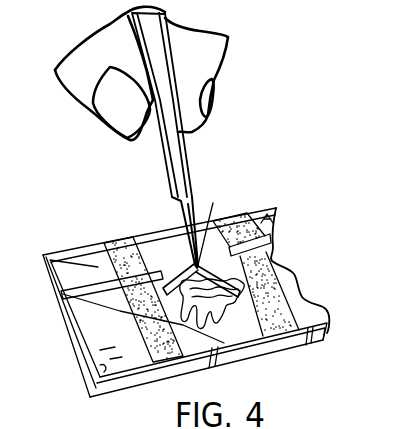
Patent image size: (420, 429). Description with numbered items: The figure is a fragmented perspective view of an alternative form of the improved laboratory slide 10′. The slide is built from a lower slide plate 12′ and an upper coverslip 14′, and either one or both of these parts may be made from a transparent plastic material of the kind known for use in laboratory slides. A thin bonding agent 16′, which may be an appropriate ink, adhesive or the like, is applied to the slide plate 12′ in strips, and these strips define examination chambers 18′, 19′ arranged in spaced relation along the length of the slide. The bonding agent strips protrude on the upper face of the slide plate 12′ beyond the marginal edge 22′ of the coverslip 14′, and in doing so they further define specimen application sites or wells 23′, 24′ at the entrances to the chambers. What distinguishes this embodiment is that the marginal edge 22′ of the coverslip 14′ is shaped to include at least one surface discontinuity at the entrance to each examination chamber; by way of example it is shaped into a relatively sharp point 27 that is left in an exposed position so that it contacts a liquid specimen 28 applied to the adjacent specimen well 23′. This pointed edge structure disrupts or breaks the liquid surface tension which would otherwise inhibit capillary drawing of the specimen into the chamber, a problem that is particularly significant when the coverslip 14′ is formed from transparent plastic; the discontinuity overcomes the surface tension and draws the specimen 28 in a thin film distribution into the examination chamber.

The laboratory slide 10′ is at (233, 165).
The slide plate 12′ is at (67, 263).
The coverslip 14′ is at (90, 384).
The bonding agent 16′ is at (250, 242).
The examination chamber 18′ is at (180, 322).
The examination chamber 19′ is at (300, 313).
The marginal edge 22′ is at (98, 263).
The specimen well 23′ is at (216, 202).
The specimen well 24′ is at (276, 208).
The sharp point 27 is at (217, 225).
The liquid specimen 28 is at (195, 266).